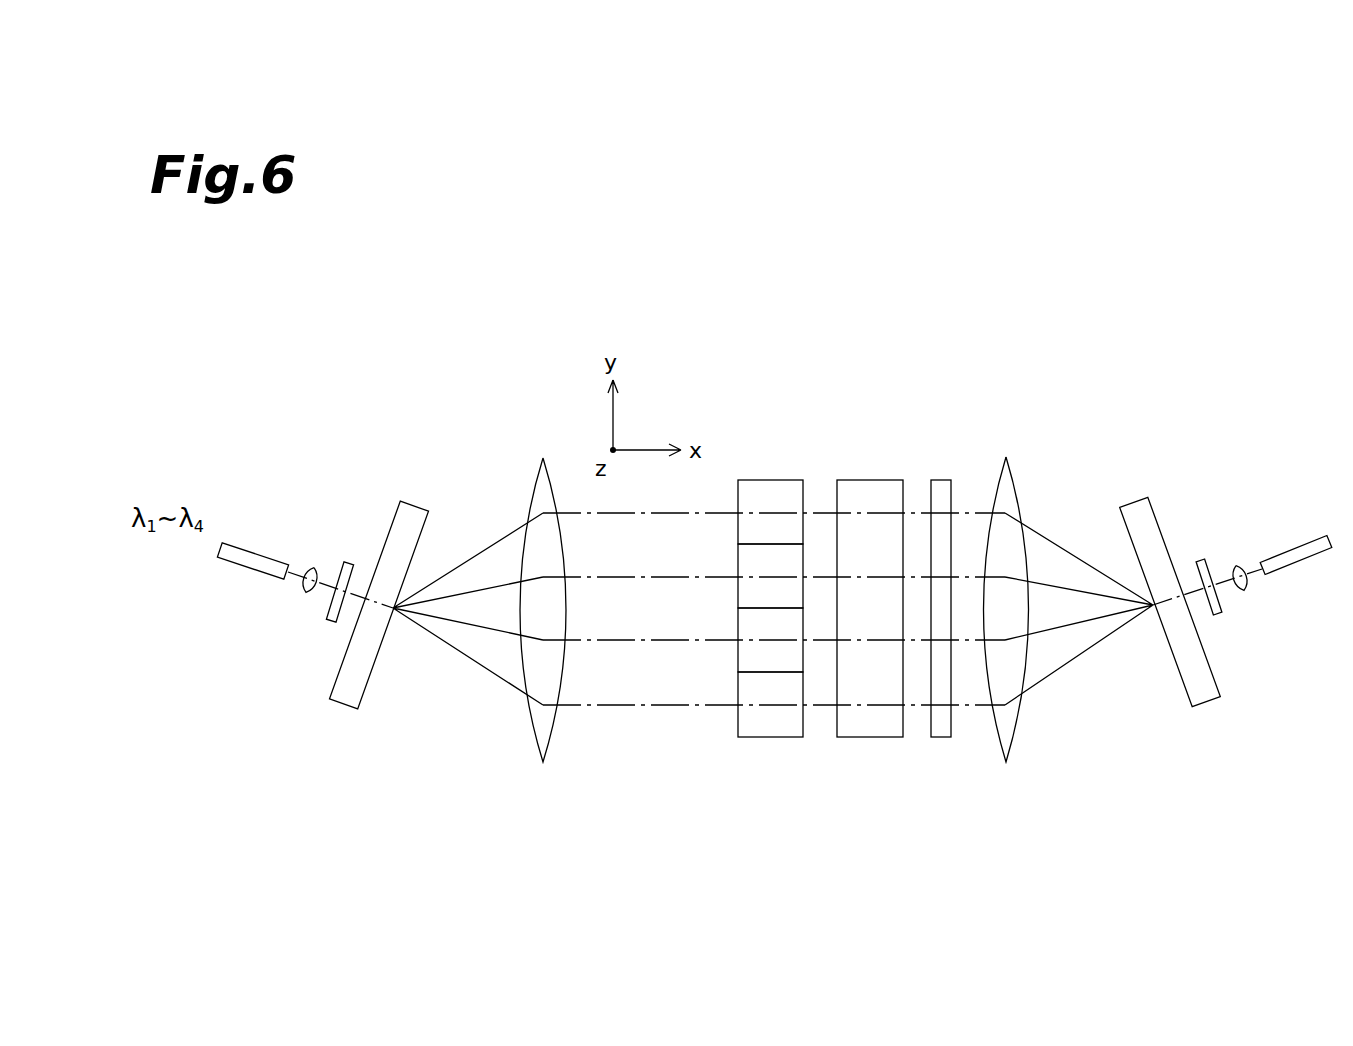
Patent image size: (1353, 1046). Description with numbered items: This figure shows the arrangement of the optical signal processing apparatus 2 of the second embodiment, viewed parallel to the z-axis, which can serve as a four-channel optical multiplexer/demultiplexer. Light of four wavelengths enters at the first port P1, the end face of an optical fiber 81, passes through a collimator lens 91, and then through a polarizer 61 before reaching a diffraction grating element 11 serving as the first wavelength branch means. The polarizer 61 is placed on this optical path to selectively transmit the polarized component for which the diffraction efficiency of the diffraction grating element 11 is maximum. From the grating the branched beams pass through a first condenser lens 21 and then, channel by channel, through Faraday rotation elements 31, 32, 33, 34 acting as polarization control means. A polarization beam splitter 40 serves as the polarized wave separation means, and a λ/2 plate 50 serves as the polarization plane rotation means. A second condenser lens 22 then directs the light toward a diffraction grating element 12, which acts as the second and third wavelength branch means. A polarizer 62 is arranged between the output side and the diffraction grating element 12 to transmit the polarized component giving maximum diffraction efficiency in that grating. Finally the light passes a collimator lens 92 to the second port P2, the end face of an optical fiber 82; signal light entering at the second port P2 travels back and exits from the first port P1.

The optical signal processing apparatus 2 is at (924, 409).
The diffraction grating element 11 is at (369, 678).
The diffraction grating element 12 is at (1180, 680).
The first condenser lens 21 is at (555, 730).
The second condenser lens 22 is at (1015, 727).
The Faraday rotation element 31 is at (745, 528).
The Faraday rotation element 32 is at (745, 592).
The Faraday rotation element 33 is at (745, 655).
The Faraday rotation element 34 is at (745, 720).
The polarization beam splitter 40 is at (870, 728).
The λ/2 plate 50 is at (943, 727).
The polarizer 61 is at (344, 563).
The polarizer 62 is at (1207, 558).
The optical fiber 81 is at (251, 569).
The optical fiber 82 is at (1297, 565).
The collimator lens 91 is at (305, 593).
The collimator lens 92 is at (1247, 583).
The first port P1 is at (298, 567).
The second port P2 is at (1255, 562).